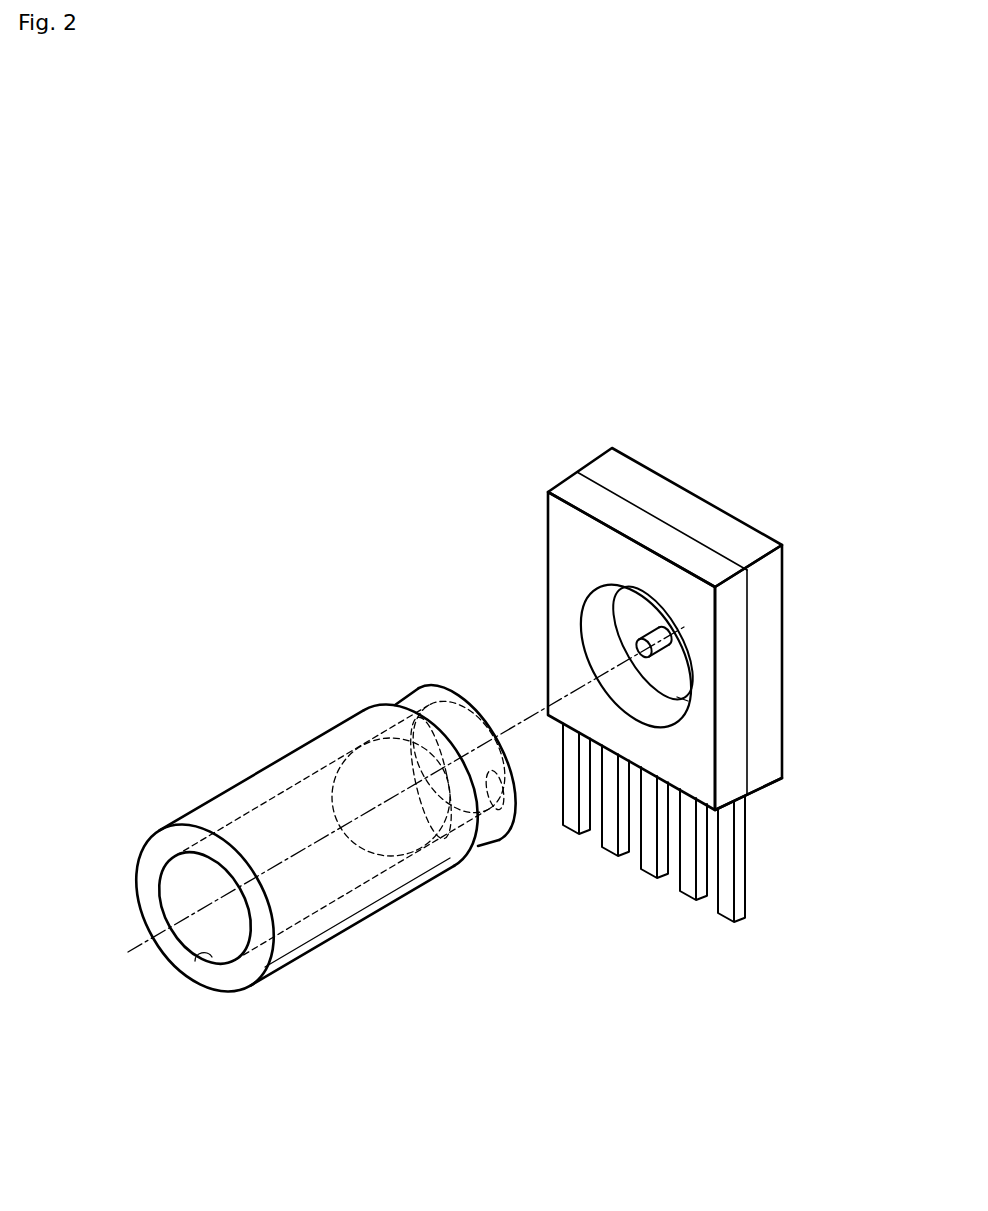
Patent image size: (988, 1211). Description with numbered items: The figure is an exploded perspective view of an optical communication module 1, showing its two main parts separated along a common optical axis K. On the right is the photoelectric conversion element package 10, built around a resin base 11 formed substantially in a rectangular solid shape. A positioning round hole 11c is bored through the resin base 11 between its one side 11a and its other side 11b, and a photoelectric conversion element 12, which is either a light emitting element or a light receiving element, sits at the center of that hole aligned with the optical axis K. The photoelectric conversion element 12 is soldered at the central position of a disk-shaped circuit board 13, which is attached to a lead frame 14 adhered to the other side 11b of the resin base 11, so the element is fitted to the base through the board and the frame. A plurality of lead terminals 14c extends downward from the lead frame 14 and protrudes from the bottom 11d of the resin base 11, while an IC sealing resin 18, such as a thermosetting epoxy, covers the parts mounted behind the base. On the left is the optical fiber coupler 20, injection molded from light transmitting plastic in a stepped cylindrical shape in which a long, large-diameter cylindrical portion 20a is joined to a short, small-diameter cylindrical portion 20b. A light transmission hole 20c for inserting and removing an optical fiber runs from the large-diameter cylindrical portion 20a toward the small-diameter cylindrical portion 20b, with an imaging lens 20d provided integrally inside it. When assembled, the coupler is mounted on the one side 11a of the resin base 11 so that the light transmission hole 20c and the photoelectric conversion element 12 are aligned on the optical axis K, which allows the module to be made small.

The optical communication module 1 is at (308, 446).
The photoelectric conversion element package 10 is at (785, 498).
The resin base 11 is at (548, 507).
The one side of resin base 11a is at (563, 548).
The other side of resin base 11b is at (650, 493).
The positioning round hole 11c is at (592, 612).
The bottom of resin base 11d is at (758, 797).
The photoelectric conversion element 12 is at (640, 647).
The disk-shaped circuit board 13 is at (663, 673).
The lead frame 14 is at (748, 895).
The lead terminals 14c is at (651, 875).
The IC sealing resin 18 is at (768, 682).
The optical fiber coupler 20 is at (208, 797).
The large-diameter cylindrical portion 20a is at (290, 752).
The small-diameter cylindrical portion 20b is at (412, 690).
The light transmission hole 20c is at (193, 962).
The imaging lens 20d is at (377, 842).
The optical axis K is at (136, 941).